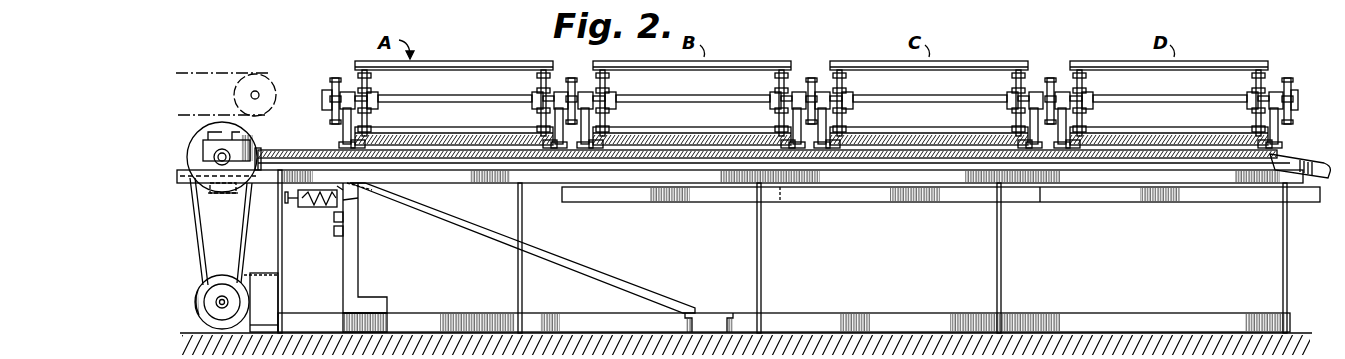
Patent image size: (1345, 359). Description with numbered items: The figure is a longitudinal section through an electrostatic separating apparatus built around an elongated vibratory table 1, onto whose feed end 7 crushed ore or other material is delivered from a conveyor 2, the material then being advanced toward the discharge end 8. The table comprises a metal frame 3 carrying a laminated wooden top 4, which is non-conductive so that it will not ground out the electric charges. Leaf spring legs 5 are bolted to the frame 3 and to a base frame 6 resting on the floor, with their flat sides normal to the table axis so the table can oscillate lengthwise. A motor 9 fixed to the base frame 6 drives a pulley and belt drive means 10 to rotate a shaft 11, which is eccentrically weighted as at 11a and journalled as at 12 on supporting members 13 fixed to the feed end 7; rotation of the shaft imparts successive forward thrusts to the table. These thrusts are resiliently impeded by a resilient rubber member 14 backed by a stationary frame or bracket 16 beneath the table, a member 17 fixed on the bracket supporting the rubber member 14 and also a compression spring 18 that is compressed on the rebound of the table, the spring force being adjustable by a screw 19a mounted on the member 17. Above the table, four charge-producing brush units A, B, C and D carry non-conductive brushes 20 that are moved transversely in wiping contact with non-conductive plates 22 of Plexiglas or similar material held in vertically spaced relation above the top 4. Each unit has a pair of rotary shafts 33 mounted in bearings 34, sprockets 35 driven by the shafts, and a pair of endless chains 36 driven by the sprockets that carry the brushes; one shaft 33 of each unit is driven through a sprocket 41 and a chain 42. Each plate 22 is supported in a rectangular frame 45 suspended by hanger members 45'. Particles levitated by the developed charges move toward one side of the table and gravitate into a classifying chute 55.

The vibratory table 1 is at (296, 150).
The conveyor 2 is at (217, 73).
The metal frame 3 is at (461, 184).
The laminated wooden top 4 is at (323, 152).
The leaf spring legs 5 is at (523, 228).
The base frame 6 is at (822, 318).
The feed end 7 is at (273, 150).
The discharge end 8 is at (1286, 157).
The motor 9 is at (196, 296).
The pulley and belt drive means 10 is at (196, 236).
The shaft 11 is at (190, 185).
The eccentric weight 11a is at (210, 193).
The journal 12 is at (212, 147).
The supporting members 13 is at (186, 168).
The resilient rubber member 14 is at (352, 208).
The stationary frame or bracket 16 is at (358, 243).
The member 17 is at (333, 231).
The compression spring 18 is at (322, 208).
The screw 19a is at (289, 205).
The non-conductive brushes 20 is at (532, 62).
The plates 22 is at (465, 136).
The rotary shafts 33 is at (488, 97).
The bearings 34 is at (350, 90).
The sprockets 35 is at (543, 83).
The endless chains 36 is at (372, 78).
The sprocket 41 is at (328, 103).
The chain 42 is at (330, 80).
The rectangular frame 45 is at (645, 128).
The hanger members 45' is at (727, 128).
The classifying chute 55 is at (672, 206).